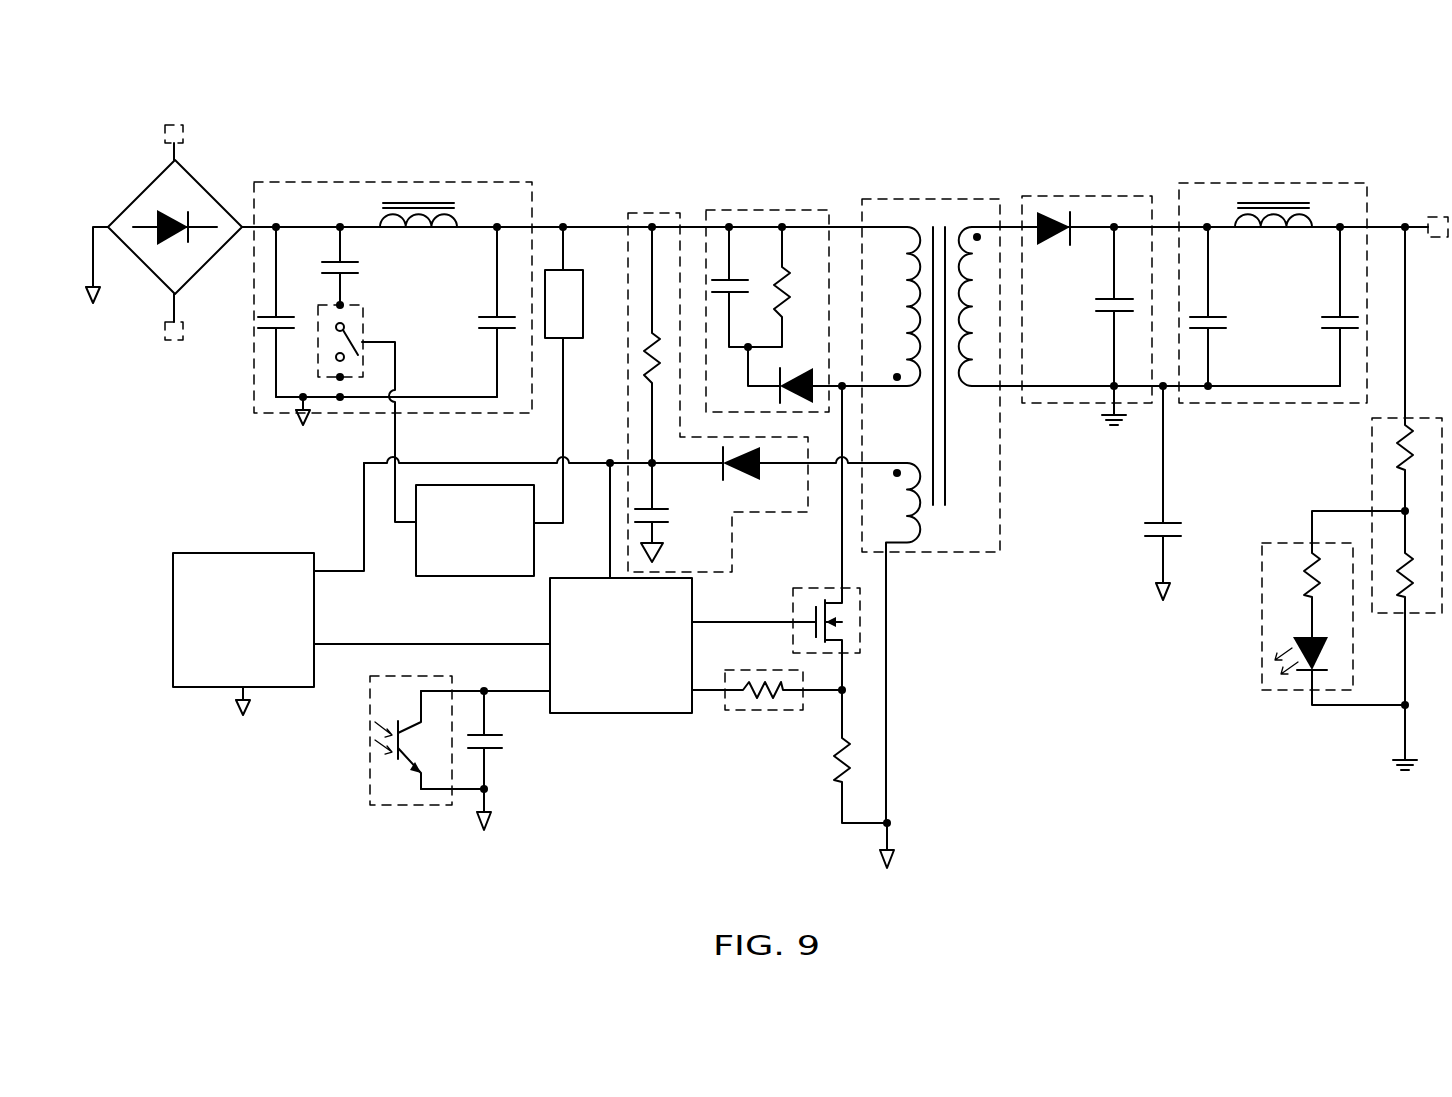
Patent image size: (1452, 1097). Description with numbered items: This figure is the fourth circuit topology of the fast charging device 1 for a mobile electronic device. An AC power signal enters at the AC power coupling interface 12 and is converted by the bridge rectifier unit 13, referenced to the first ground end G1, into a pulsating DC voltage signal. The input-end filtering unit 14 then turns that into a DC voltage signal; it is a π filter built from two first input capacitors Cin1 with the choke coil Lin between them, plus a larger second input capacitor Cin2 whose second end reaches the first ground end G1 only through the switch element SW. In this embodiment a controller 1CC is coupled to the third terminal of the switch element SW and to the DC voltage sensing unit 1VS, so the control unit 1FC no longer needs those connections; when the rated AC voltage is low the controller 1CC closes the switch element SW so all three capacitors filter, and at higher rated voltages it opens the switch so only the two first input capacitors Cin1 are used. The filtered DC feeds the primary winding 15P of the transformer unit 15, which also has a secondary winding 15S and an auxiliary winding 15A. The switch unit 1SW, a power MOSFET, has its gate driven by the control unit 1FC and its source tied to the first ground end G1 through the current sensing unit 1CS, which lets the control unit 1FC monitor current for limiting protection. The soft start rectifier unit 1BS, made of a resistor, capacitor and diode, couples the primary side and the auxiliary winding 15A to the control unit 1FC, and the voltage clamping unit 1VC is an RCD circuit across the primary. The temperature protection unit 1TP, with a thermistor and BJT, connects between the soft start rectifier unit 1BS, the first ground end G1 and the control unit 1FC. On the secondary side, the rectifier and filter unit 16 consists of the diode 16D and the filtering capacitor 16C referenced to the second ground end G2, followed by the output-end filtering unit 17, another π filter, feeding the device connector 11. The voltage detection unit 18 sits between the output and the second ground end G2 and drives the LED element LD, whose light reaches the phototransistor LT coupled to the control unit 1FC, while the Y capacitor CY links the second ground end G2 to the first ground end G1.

The fast charging device 1 is at (1107, 730).
The device connector 11 is at (1438, 237).
The AC power coupling interface 12 is at (163, 130).
The bridge rectifier unit 13 is at (222, 205).
The input-end filtering unit 14 is at (388, 310).
The transformer unit 15 is at (928, 467).
The primary winding 15P is at (905, 238).
The secondary winding 15S is at (975, 378).
The auxiliary winding 15A is at (915, 535).
The rectifier and filter unit 16 is at (1116, 257).
The diode 16D is at (1050, 212).
The filtering capacitor 16C is at (1098, 305).
The output-end filtering unit 17 is at (1367, 183).
The voltage detection unit 18 is at (1372, 440).
The DC voltage sensing unit 1VS is at (583, 283).
The soft start rectifier unit 1BS is at (657, 210).
The voltage clamping unit 1VC is at (747, 208).
The switch unit 1SW is at (860, 657).
The current sensing unit 1CS is at (760, 711).
The control unit 1FC is at (620, 714).
The controller 1CC is at (448, 577).
The temperature protection unit 1TP is at (173, 555).
The first input capacitors Cin1 is at (258, 322).
The second input capacitor Cin2 is at (333, 258).
The choke coil Lin is at (418, 239).
The switch element SW is at (365, 322).
The phototransistor LT is at (370, 773).
The LED element LD is at (1262, 660).
The Y capacitor CY is at (1144, 469).
The first ground end G1 is at (650, 580).
The second ground end G2 is at (1239, 585).